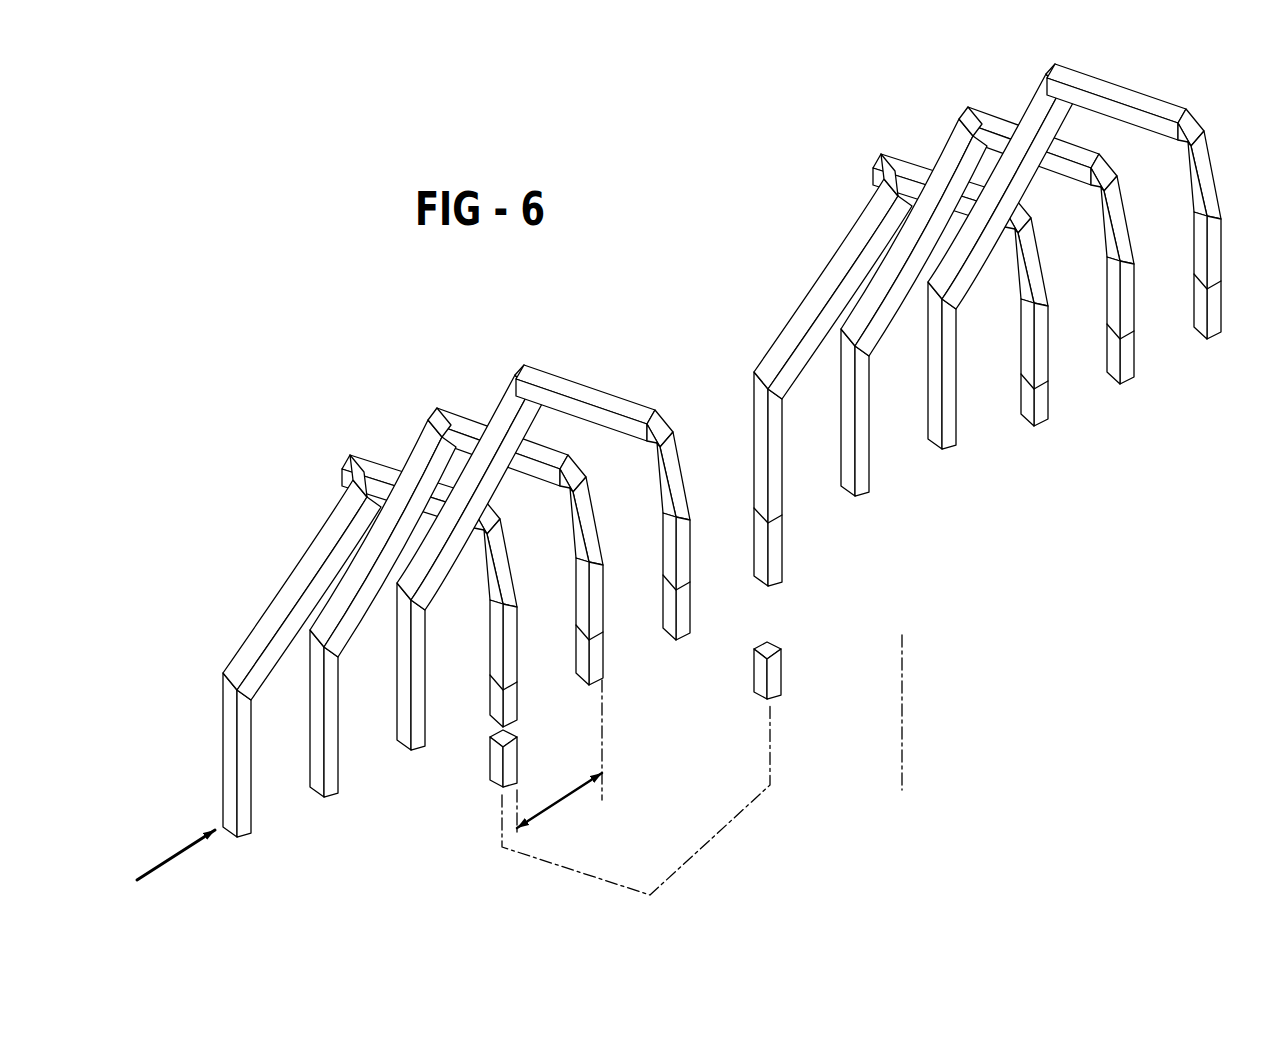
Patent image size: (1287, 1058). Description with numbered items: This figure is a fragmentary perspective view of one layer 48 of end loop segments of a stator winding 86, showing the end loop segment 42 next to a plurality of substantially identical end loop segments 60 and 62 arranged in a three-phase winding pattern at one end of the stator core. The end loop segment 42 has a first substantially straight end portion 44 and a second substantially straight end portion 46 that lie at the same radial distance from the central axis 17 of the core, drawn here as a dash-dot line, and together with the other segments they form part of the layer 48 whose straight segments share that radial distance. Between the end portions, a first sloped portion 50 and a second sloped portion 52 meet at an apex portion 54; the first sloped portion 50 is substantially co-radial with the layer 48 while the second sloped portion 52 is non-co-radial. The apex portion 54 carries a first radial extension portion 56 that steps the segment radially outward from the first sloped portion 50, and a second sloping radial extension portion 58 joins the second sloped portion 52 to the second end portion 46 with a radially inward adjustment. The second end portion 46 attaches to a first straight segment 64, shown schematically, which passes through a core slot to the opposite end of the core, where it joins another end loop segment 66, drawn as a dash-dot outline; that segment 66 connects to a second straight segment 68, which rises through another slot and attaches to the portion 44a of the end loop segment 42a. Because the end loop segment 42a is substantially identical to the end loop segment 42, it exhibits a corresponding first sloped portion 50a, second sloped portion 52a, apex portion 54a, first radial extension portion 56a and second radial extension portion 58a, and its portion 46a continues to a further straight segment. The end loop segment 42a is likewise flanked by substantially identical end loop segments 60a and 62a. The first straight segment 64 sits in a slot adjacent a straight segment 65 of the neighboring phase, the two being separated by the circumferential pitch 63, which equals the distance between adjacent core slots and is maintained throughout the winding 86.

The central axis 17 is at (903, 660).
The end loop segment 42 is at (466, 563).
The end loop segment 42a is at (976, 321).
The first substantially straight end portion 44 is at (237, 768).
The portion of end loop segment 44a is at (777, 477).
The second substantially straight end portion 46 is at (512, 645).
The portion of end loop segment 46a is at (1040, 405).
The layer 48 is at (180, 857).
The first sloped portion 50 is at (282, 587).
The side member 50a is at (770, 346).
The second sloped portion 52 is at (400, 462).
The side member 52a is at (909, 155).
The apex portion 54 is at (352, 476).
The end portion 54a is at (880, 176).
The first radial extension portion 56 is at (373, 482).
The cross member 56a is at (905, 183).
The second sloping radial extension portion 58 is at (505, 580).
The bent portion 58a is at (1027, 268).
The end loop segment 60 is at (453, 404).
The end loop segment 60a is at (955, 108).
The end loop segment 62 is at (553, 366).
The end loop segment 62a is at (1133, 80).
The circumferential pitch 63 is at (553, 810).
The first straight segment 64 is at (490, 710).
The straight segment 65 is at (612, 651).
The end loop segment 66 is at (745, 818).
The second straight segment 68 is at (782, 565).
The stator winding 86 is at (749, 447).